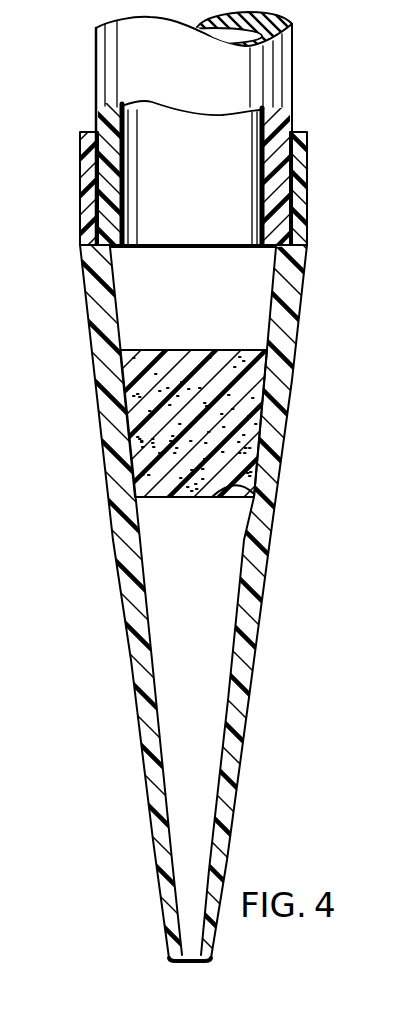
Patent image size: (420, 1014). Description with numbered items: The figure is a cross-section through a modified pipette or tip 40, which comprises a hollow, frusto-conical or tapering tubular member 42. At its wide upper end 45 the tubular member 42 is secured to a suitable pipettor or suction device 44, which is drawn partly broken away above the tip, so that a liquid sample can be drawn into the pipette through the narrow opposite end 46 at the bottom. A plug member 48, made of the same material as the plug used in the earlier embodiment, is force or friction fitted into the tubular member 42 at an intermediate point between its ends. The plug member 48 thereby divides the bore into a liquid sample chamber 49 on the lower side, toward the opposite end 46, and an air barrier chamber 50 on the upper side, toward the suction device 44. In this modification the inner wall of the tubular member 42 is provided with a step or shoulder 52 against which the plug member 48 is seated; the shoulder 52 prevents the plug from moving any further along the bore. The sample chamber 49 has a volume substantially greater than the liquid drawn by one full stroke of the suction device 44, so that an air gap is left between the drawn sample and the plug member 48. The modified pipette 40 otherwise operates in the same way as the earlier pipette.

The modified pipette or tip 40 is at (300, 408).
The tubular member 42 is at (132, 597).
The pipettor or suction device 44 is at (293, 82).
The end 45 is at (292, 134).
The opposite end 46 is at (183, 962).
The plug member 48 is at (143, 403).
The liquid sample chamber 49 is at (218, 624).
The air barrier chamber 50 is at (128, 294).
The step or shoulder 52 is at (218, 497).